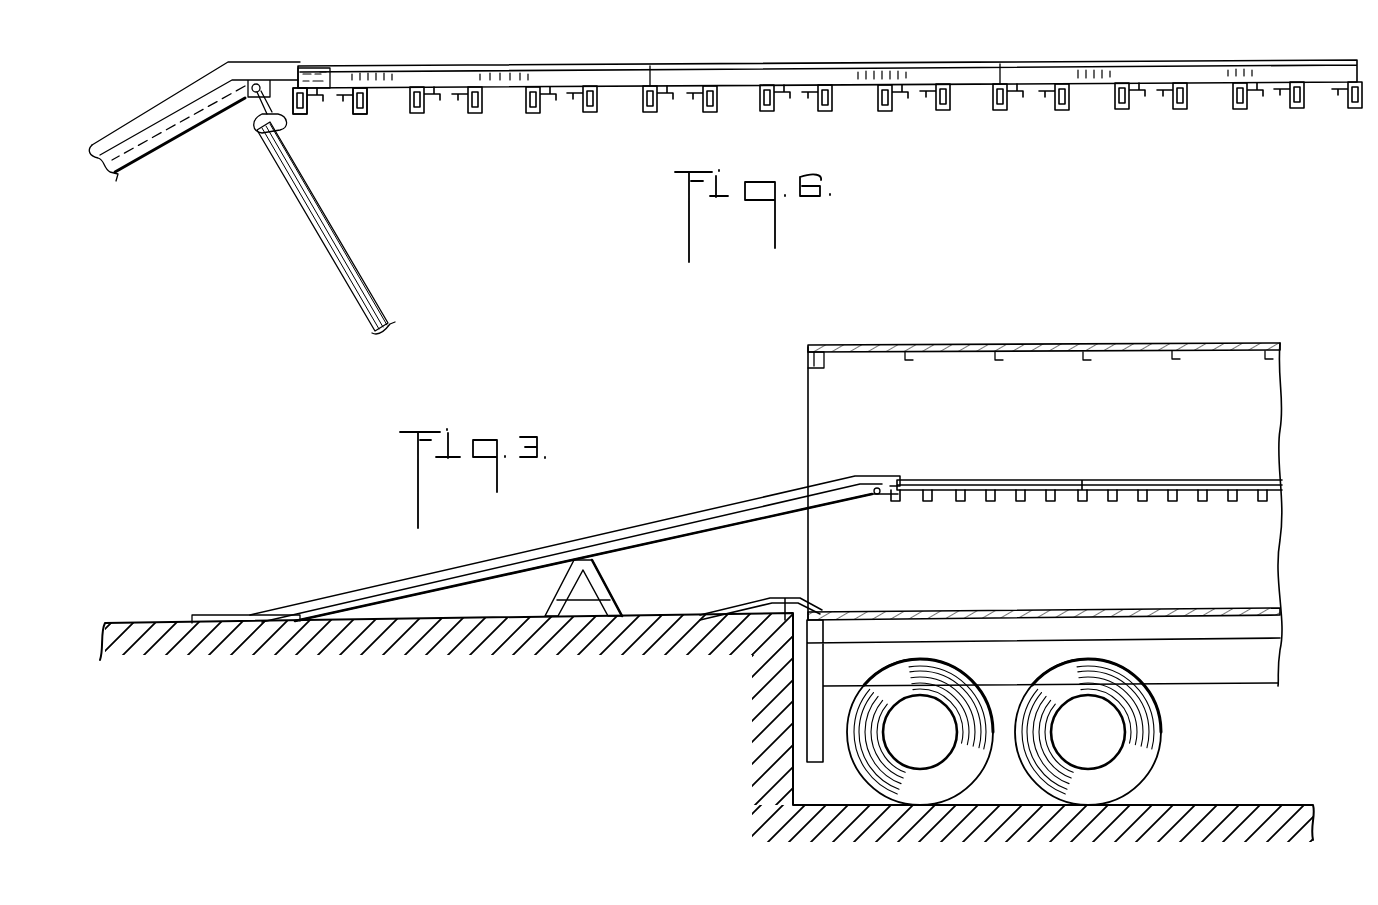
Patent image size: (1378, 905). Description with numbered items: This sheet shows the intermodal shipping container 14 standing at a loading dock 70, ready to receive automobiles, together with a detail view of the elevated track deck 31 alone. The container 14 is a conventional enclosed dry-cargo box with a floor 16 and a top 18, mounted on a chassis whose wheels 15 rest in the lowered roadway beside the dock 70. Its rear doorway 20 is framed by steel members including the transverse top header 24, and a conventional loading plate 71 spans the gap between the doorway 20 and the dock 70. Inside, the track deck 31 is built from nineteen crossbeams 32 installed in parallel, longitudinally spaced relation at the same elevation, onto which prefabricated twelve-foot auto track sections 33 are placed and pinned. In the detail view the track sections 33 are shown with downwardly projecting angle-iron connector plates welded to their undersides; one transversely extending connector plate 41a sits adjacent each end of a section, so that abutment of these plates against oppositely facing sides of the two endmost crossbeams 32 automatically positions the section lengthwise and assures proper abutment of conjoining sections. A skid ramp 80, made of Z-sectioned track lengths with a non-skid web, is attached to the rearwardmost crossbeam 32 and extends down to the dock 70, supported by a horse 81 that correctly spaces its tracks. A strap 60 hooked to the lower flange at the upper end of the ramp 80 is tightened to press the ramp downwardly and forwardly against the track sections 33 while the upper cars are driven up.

In FIG. 3, the intermodal shipping container 14 is at (1008, 549).
In FIG. 3, the wheels 15 is at (1177, 737).
In FIG. 3, the floor 16 is at (976, 612).
In FIG. 3, the top 18 is at (950, 344).
In FIG. 3, the rear doorway 20 is at (797, 442).
In FIG. 3, the transverse top header 24 is at (808, 360).
In FIG. 6, the elevated track deck 31 is at (827, 49).
In FIG. 3, the elevated track deck 31 is at (1089, 485).
In FIG. 6, the crossbeams 32 is at (822, 118).
In FIG. 3, the crossbeams 32 is at (998, 503).
In FIG. 6, the auto track sections 33 is at (392, 70).
In FIG. 3, the auto track sections 33 is at (1005, 479).
In FIG. 6, the connector plate 41a is at (350, 100).
In FIG. 6, the straps 60 is at (355, 276).
In FIG. 3, the loading dock 70 is at (662, 684).
In FIG. 3, the loading plate 71 is at (777, 597).
In FIG. 6, the skid ramp 80 is at (172, 108).
In FIG. 3, the skid ramp 80 is at (678, 522).
In FIG. 3, the horses 81 is at (600, 585).